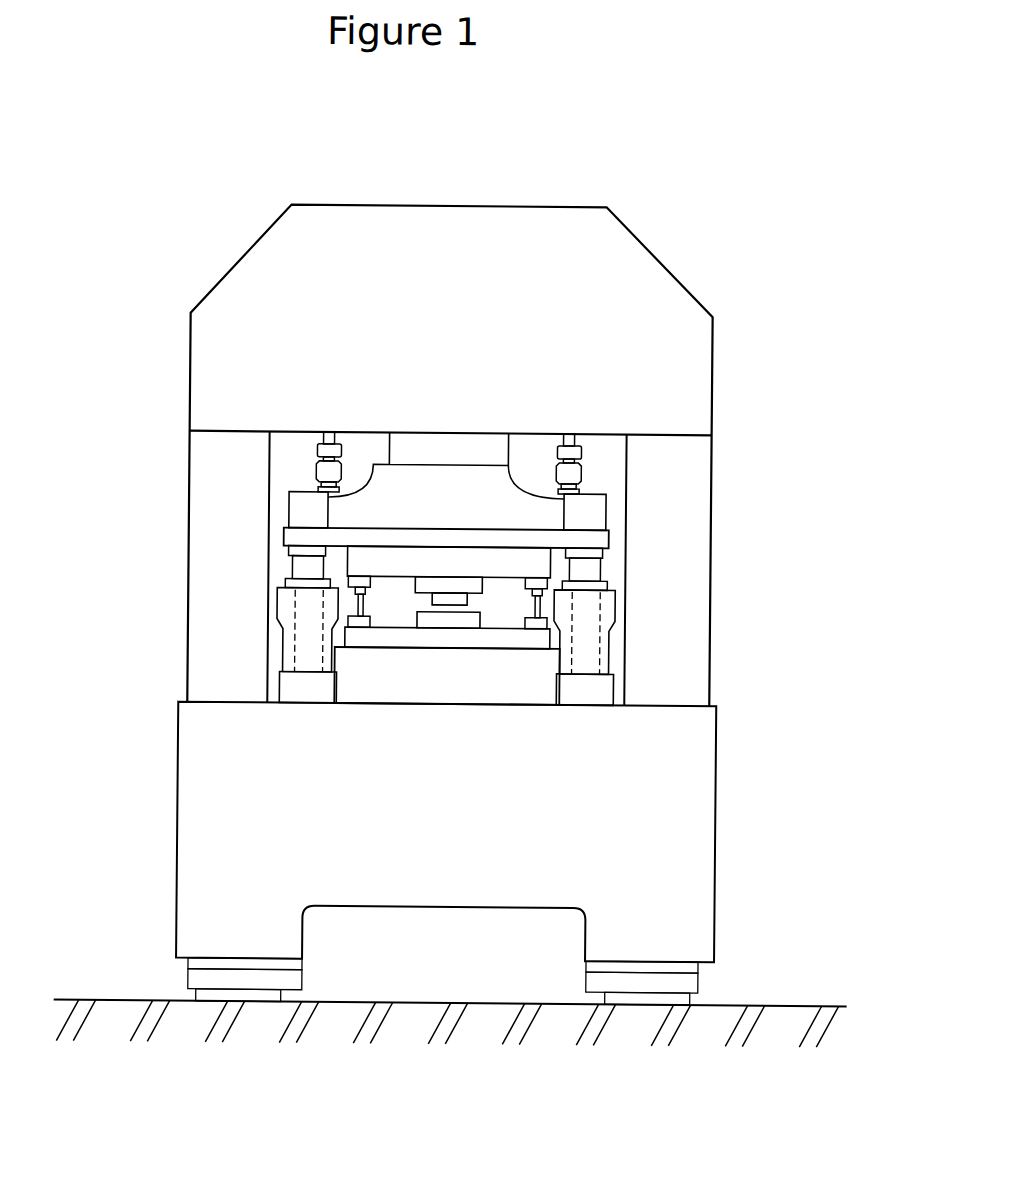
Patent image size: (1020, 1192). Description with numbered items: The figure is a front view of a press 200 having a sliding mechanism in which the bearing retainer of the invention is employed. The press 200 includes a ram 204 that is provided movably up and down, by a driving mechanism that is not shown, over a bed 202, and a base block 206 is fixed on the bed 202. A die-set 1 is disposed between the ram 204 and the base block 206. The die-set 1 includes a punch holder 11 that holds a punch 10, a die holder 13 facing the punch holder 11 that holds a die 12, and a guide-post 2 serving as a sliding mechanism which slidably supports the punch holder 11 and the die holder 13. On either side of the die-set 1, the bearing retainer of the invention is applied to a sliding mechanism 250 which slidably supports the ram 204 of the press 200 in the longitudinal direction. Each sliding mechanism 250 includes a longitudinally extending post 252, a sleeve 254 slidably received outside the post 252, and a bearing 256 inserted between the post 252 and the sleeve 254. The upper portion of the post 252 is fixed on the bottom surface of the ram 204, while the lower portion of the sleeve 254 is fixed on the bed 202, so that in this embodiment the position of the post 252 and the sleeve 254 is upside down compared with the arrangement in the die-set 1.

The press 200 is at (580, 168).
The bed 202 is at (697, 807).
The ram 204 is at (518, 473).
The base block 206 is at (533, 688).
The sliding mechanism 250 is at (452, 634).
The post 252 is at (295, 565).
The sleeve 254 is at (280, 608).
The bearing 256 is at (285, 581).
The die-set 1 is at (447, 673).
The guide-post 2 is at (369, 606).
The punch 10 is at (447, 595).
The punch holder 11 is at (527, 555).
The die 12 is at (430, 622).
The die holder 13 is at (465, 638).